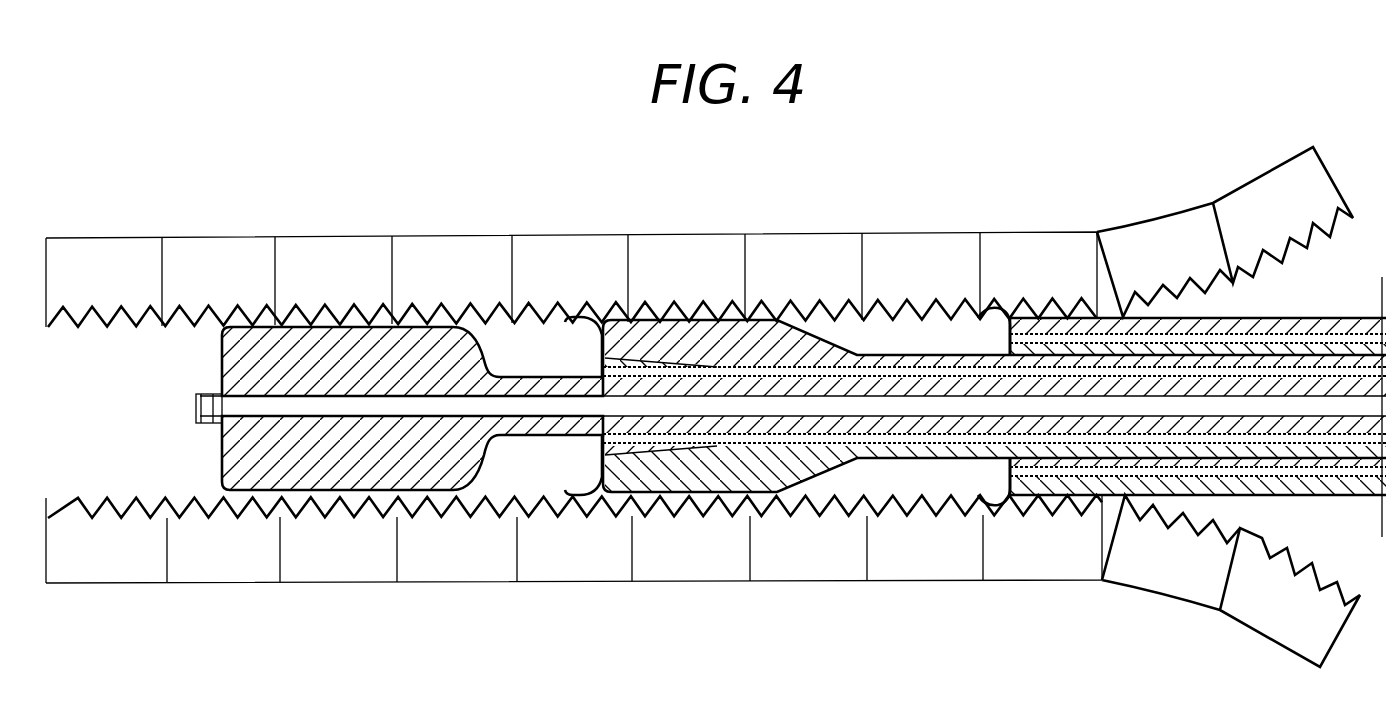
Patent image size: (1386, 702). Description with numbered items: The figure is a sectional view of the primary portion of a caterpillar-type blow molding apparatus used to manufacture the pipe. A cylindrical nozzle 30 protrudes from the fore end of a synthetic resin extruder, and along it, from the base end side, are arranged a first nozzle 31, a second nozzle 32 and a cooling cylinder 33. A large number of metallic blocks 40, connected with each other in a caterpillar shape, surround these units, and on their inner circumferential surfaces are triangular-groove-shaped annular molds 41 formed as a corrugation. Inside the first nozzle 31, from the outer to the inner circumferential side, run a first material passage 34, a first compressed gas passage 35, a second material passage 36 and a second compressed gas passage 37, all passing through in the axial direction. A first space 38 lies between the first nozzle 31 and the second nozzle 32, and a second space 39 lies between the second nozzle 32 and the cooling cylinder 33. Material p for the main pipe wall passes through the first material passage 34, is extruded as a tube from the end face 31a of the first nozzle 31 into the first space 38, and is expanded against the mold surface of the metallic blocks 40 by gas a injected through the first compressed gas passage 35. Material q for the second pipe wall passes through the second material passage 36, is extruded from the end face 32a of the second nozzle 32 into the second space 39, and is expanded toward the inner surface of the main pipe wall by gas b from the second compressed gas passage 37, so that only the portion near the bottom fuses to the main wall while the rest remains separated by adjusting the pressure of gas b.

The cylindrical nozzle 30 is at (1344, 314).
The first nozzle 31 is at (1295, 318).
The end face of the first nozzle 31a is at (1020, 497).
The second nozzle 32 is at (790, 322).
The end face of the second nozzle 32a is at (608, 497).
The cooling cylinder 33 is at (344, 338).
The first material passage 34 is at (1177, 337).
The first compressed gas passage 35 is at (1047, 337).
The second material passage 36 is at (718, 362).
The second compressed gas passage 37 is at (660, 366).
The first space 38 is at (905, 480).
The second space 39 is at (533, 477).
The metallic blocks 40 is at (530, 245).
The annular molds 41 is at (148, 497).
The gas a is at (1004, 351).
The gas b is at (590, 373).
The material p is at (990, 318).
The material q is at (588, 318).